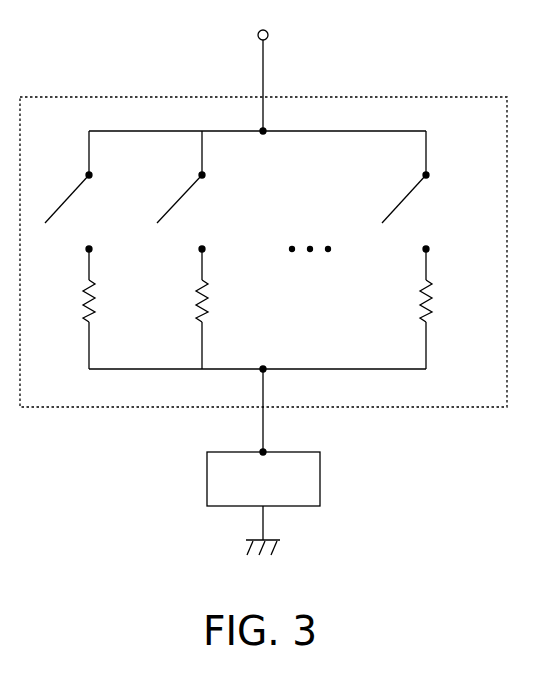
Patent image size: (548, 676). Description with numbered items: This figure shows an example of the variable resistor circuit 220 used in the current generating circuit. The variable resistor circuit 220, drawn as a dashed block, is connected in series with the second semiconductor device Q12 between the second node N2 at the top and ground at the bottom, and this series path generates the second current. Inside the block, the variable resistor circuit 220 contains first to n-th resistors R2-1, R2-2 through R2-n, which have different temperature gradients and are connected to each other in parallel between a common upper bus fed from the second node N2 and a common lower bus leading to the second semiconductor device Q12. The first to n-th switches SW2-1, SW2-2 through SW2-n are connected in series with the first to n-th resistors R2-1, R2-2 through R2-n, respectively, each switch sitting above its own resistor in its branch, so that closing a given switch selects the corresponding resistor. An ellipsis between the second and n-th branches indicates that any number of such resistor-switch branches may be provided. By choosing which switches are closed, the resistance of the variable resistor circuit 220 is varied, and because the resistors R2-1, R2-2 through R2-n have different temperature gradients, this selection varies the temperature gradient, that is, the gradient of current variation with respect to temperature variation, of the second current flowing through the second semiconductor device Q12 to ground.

The variable resistor circuit 220 is at (91, 36).
The second node N2 is at (283, 78).
The first switch SW2-1 is at (96, 191).
The second switch SW2-2 is at (209, 191).
The n-th switch SW2-n is at (435, 191).
The first resistor R2-1 is at (60, 309).
The second resistor R2-2 is at (170, 309).
The n-th resistor R2-n is at (394, 309).
The second semiconductor device Q12 is at (263, 494).